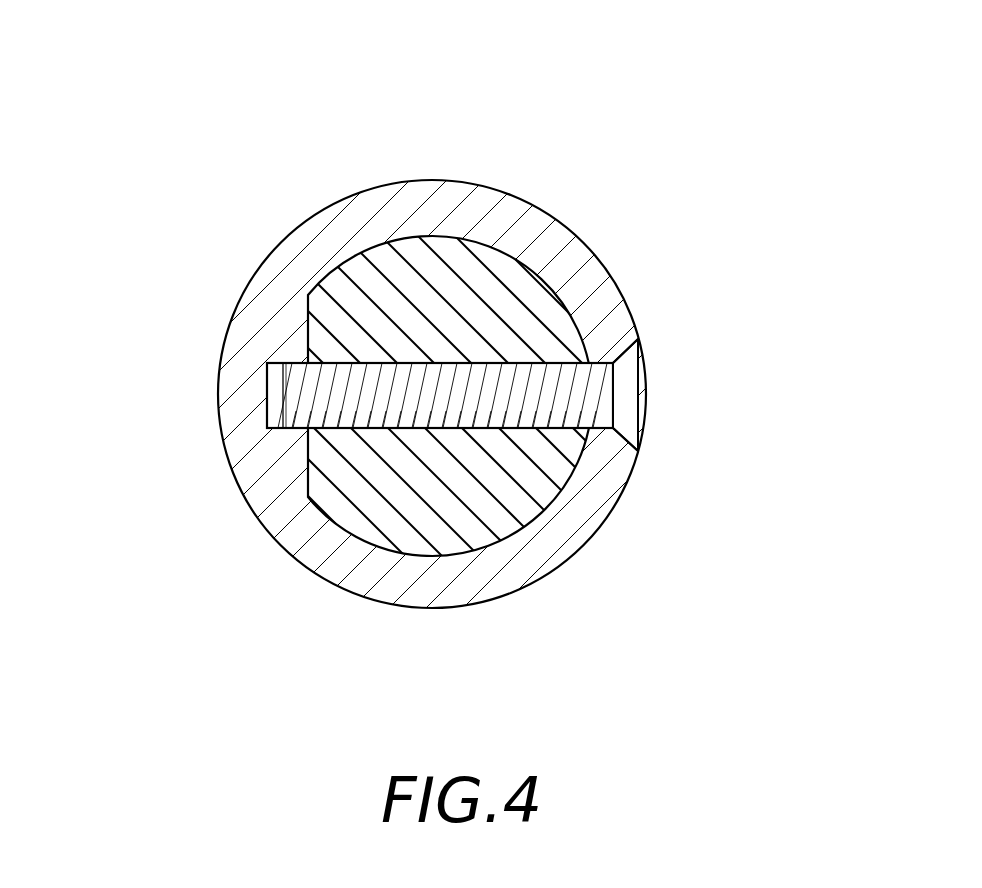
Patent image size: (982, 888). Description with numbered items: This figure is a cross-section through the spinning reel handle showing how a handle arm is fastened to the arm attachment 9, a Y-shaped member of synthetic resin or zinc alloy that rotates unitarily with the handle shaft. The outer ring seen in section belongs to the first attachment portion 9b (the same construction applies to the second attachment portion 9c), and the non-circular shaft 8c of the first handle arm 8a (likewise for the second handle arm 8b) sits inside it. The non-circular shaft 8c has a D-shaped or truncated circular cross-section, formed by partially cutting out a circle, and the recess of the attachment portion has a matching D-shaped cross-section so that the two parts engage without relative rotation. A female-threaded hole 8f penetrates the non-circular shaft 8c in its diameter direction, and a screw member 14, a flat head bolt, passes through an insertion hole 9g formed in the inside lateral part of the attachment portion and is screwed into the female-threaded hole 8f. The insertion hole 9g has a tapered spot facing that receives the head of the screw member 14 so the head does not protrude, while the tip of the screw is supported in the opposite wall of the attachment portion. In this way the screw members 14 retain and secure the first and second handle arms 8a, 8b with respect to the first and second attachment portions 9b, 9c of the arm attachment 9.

The first handle arm 8a is at (413, 226).
The second handle arm 8b is at (445, 347).
The non-circular shaft 8c is at (541, 253).
The female-threaded hole 8f is at (457, 428).
The arm attachment 9 is at (650, 283).
The first attachment portion 9b is at (238, 272).
The second attachment portion 9c is at (491, 395).
The insertion hole 9g is at (613, 380).
The screw member 14 is at (433, 392).